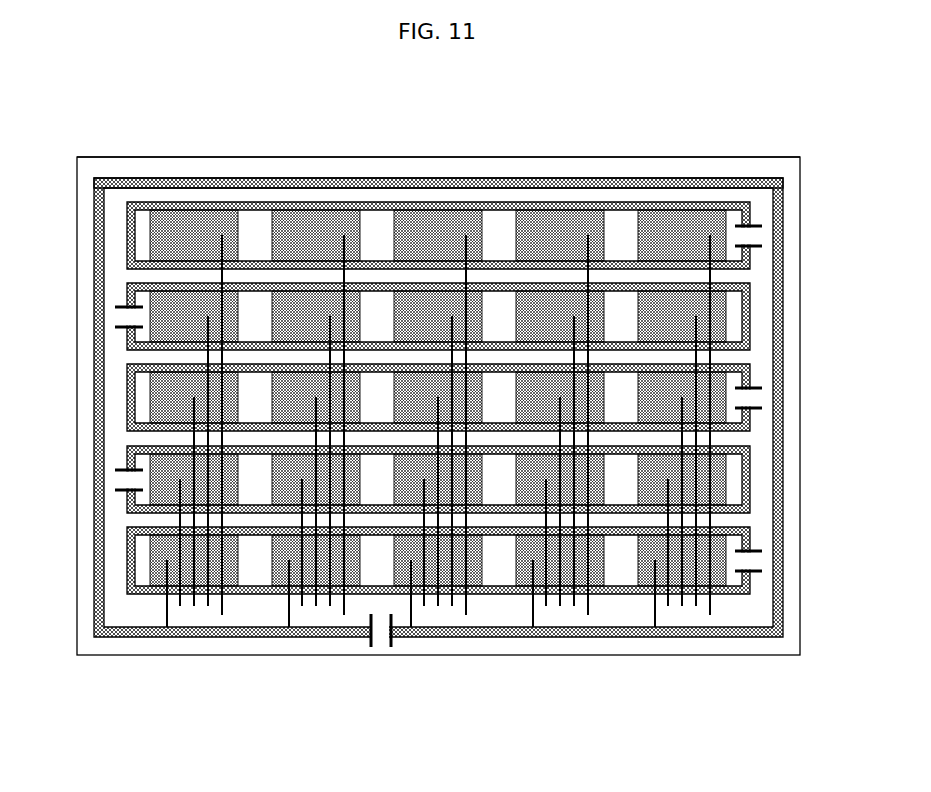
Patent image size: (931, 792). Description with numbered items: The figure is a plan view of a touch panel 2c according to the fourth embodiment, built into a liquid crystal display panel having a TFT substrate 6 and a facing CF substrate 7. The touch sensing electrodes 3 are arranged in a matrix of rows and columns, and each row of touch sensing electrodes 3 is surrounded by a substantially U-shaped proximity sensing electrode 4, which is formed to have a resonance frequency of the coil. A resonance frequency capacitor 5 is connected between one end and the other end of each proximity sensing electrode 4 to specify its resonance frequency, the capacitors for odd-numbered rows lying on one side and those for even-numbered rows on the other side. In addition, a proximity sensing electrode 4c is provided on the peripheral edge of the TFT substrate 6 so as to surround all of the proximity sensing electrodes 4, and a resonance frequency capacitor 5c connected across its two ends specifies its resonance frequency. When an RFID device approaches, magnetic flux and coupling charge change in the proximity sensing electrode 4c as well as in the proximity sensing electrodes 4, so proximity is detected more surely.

The touch panel 2c is at (818, 124).
The touch sensing electrode 3 is at (202, 216).
The proximity sensing electrode 4 is at (127, 234).
The proximity sensing electrode 4c is at (131, 178).
The resonance frequency capacitor 5 is at (758, 225).
The resonance frequency capacitor 5c is at (397, 647).
The TFT substrate 6 is at (76, 202).
The CF substrate 7 is at (803, 198).